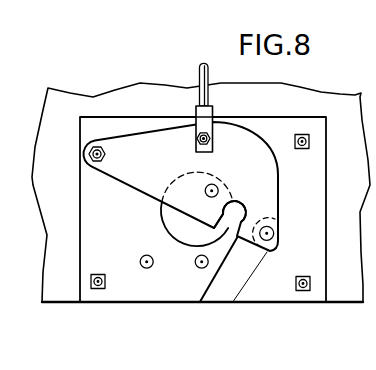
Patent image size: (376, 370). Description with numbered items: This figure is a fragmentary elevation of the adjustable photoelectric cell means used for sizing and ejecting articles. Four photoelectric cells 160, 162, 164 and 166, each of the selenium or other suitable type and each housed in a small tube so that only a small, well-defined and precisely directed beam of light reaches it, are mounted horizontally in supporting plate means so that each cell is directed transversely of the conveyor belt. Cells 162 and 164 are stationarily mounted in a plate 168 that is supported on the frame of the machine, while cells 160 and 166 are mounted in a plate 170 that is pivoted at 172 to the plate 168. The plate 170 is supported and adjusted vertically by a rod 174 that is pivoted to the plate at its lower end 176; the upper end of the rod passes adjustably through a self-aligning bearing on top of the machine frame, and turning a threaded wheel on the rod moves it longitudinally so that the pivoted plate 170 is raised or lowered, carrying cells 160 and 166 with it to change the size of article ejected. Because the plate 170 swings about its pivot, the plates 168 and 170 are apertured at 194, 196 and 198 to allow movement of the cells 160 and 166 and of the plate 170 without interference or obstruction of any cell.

The photoelectric cell 160 is at (216, 186).
The photoelectric cell 162 is at (143, 267).
The photoelectric cell 164 is at (198, 266).
The photoelectric cell 166 is at (274, 234).
The plate 168 is at (88, 192).
The plate 170 is at (267, 187).
The pivot 172 is at (84, 159).
The rod 174 is at (199, 75).
The lower end of rod 176 is at (195, 140).
The aperture 194 is at (166, 220).
The aperture 196 is at (246, 217).
The aperture 198 is at (244, 285).